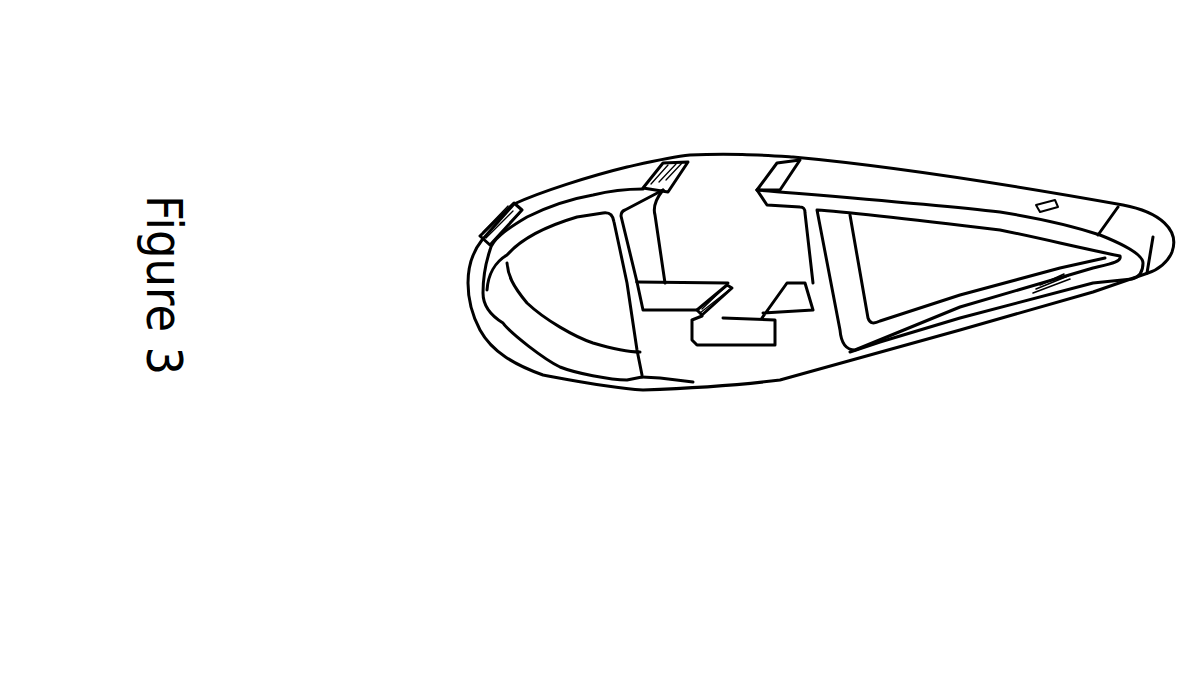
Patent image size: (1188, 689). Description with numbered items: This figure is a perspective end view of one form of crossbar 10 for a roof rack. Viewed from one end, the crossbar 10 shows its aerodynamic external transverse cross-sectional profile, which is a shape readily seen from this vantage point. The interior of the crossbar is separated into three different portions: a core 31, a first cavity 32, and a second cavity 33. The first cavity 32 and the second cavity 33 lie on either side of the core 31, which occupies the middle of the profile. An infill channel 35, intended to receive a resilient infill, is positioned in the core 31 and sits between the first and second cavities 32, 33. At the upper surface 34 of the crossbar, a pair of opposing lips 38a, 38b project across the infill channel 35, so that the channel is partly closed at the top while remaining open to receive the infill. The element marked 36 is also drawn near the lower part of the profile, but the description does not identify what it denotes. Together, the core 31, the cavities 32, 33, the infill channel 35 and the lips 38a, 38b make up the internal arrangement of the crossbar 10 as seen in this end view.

The crossbar 10 is at (978, 356).
The core 31 is at (700, 368).
The first cavity 32 is at (555, 285).
The second cavity 33 is at (970, 278).
The upper surface 34 is at (920, 183).
The infill channel 35 is at (682, 213).
The lower wall 36 is at (767, 383).
The lip 38a is at (688, 165).
The lip 38b is at (783, 158).